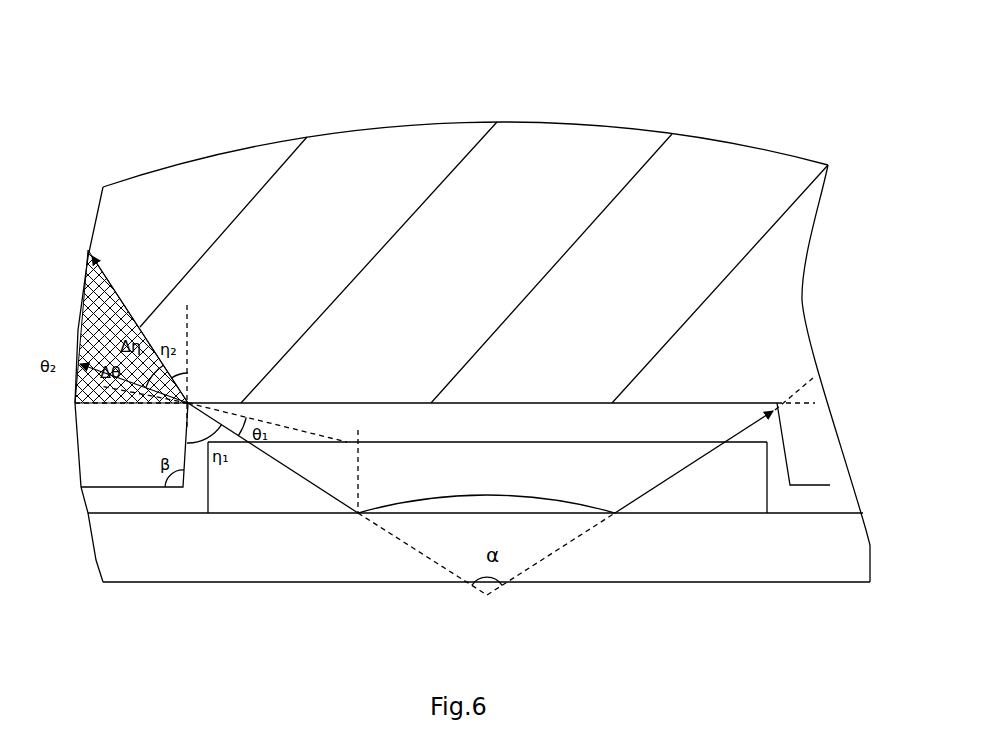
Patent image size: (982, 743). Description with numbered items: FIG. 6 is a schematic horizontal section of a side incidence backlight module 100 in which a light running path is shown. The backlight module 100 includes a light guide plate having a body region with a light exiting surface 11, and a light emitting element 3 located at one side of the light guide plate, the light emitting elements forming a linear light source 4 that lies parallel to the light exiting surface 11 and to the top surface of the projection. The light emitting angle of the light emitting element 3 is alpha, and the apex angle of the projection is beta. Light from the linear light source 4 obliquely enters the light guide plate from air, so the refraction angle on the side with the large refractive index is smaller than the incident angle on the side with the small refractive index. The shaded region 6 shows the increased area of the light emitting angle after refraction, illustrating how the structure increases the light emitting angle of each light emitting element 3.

The backlight module 100 is at (456, 28).
The light exiting surface 11 is at (242, 252).
The shaded region 6 is at (80, 290).
The light emitting element 3 is at (720, 482).
The linear light source 4 is at (348, 555).